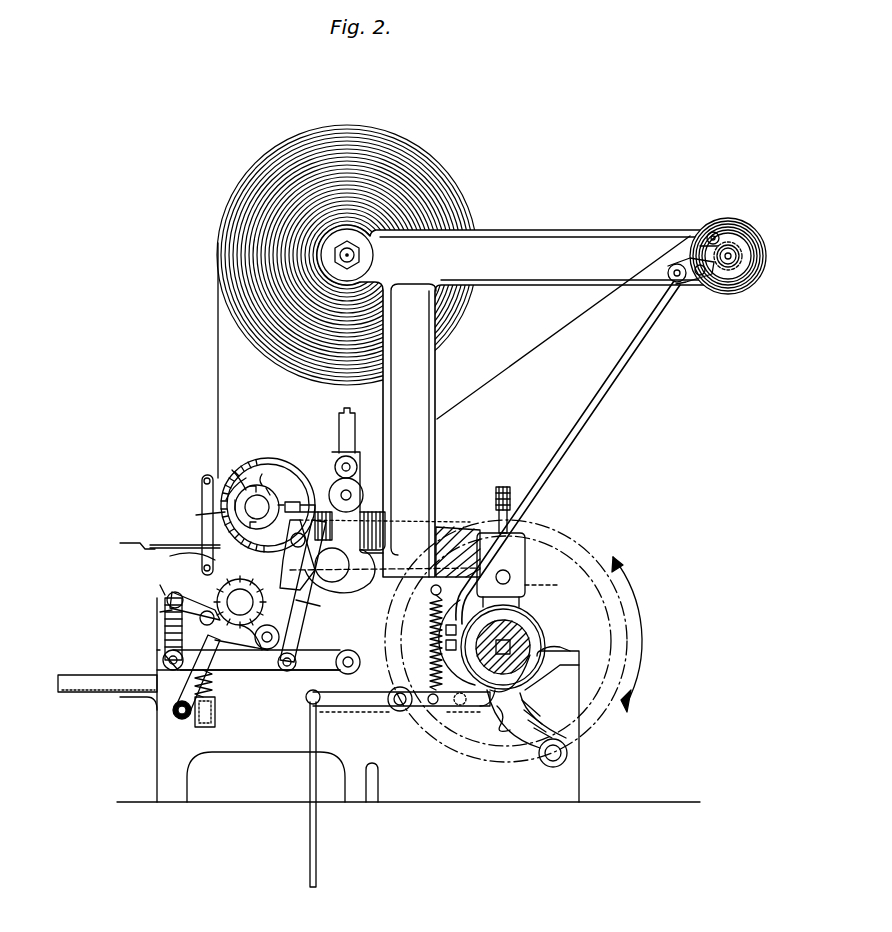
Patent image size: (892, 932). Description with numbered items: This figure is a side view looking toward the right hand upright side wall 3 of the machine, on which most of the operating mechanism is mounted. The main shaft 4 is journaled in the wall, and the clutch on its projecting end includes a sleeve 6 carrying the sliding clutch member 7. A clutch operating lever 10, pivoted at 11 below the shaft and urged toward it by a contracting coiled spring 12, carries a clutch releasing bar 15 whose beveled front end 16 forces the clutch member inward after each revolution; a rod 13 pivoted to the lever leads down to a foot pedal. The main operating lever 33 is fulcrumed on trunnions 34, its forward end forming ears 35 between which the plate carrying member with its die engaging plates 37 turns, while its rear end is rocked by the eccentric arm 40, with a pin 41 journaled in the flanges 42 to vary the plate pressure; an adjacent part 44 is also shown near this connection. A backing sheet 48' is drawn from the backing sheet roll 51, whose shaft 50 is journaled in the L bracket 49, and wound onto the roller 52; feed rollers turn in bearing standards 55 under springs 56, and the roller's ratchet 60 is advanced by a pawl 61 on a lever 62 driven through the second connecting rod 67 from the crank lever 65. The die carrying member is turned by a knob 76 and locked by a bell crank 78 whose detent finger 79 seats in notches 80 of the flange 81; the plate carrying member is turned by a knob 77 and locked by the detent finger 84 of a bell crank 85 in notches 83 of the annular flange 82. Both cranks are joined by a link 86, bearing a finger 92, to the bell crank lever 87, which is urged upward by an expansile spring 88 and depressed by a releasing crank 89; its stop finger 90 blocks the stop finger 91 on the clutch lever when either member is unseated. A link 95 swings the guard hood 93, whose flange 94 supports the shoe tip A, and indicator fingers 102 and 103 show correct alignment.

The backing sheet roll 51 is at (434, 185).
The shaft 50 is at (356, 255).
The L bracket 49 is at (416, 382).
The backing sheet 48' is at (563, 327).
The ratchet 60 is at (750, 256).
The roller 52 is at (745, 272).
The lever 62 is at (672, 250).
The pawl 61 is at (712, 284).
The second connecting rod 67 is at (590, 417).
The ears 35 is at (340, 462).
The springs 56 is at (365, 462).
The bearing standards 55 is at (385, 521).
The main operating lever 33 is at (445, 530).
The block 44 is at (503, 486).
The pin 41 is at (510, 575).
The flanges 42 is at (527, 582).
The main shaft 4 is at (520, 610).
The sleeve 6 is at (546, 630).
The eccentric arm 40 is at (555, 583).
The contracting coiled spring 12 is at (430, 618).
The crank lever 65 is at (398, 680).
The stop finger 90 is at (348, 720).
The stop finger 91 is at (200, 490).
The clutch releasing bar 15 is at (515, 715).
The pivot 11 is at (568, 765).
The clutch operating lever 10 is at (490, 715).
The beveled front end 16 is at (465, 715).
The sliding clutch member 7 is at (532, 686).
The right hand upright side wall 3 is at (262, 752).
The rod 13 is at (318, 830).
The bell crank lever 87 is at (266, 664).
The flange 81 is at (240, 657).
The releasing crank 89 is at (165, 668).
The expansile spring 88 is at (225, 690).
The bell crank 85 is at (262, 506).
The annular flange 82 is at (252, 478).
The notches 83 is at (270, 486).
The detent finger 84 is at (290, 502).
The knob 77 is at (232, 470).
The die engaging plate 37 is at (232, 480).
The indicator finger 103 is at (196, 515).
The finger 92 is at (319, 555).
The trunnions 34 is at (350, 578).
The shoe tip or sheet of material A is at (168, 543).
The flange 94 is at (172, 558).
The notches 80 is at (195, 600).
The guard hood 93 is at (160, 588).
The indicator finger 102 is at (160, 612).
The link 95 is at (163, 626).
The knob 76 is at (241, 613).
The bell crank 78 is at (280, 638).
The detent finger 79 is at (315, 625).
The link 86 is at (322, 606).